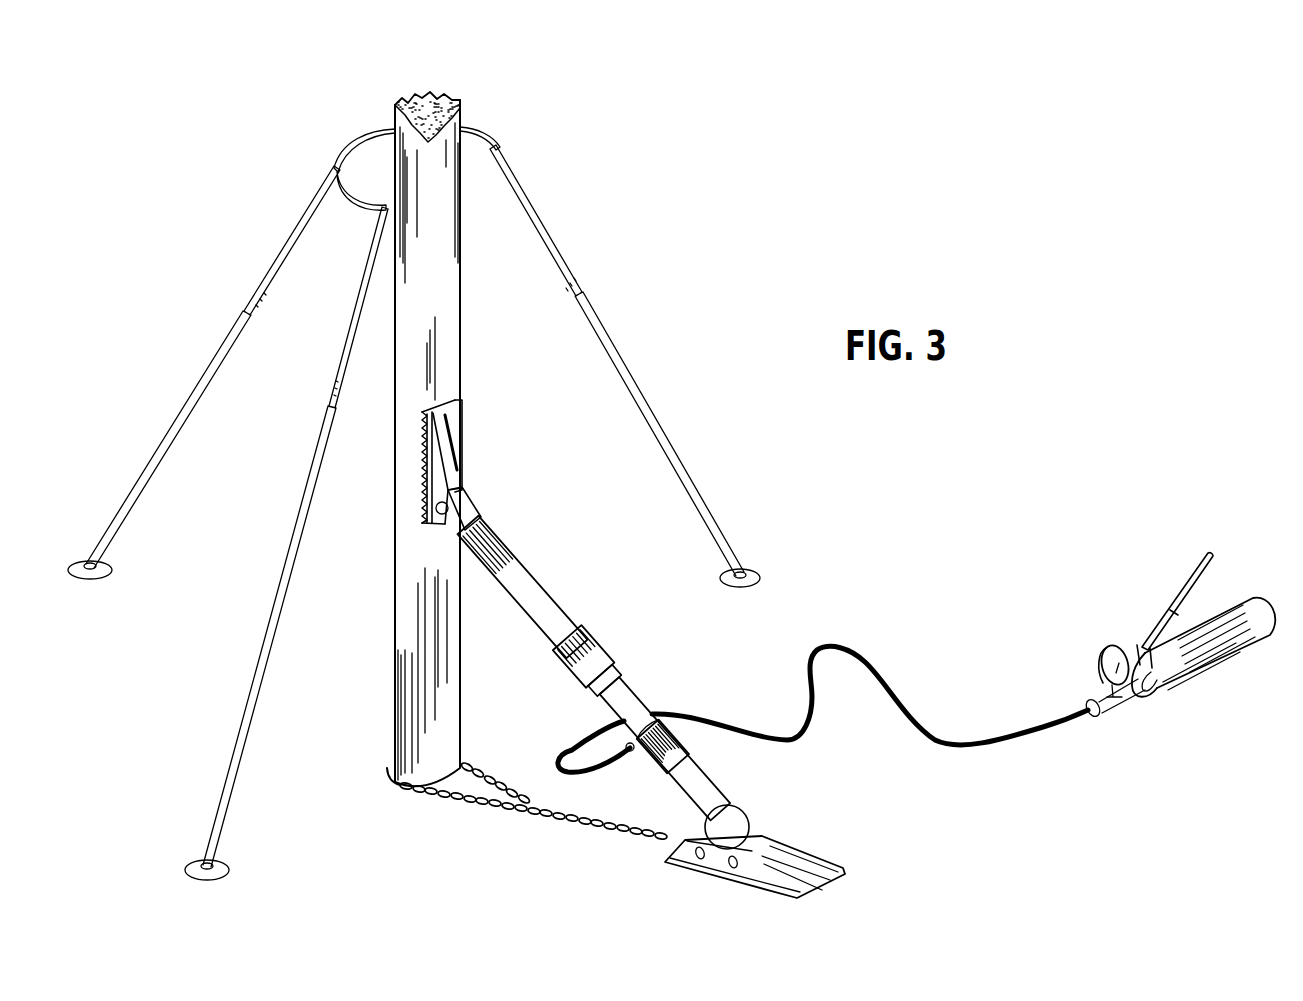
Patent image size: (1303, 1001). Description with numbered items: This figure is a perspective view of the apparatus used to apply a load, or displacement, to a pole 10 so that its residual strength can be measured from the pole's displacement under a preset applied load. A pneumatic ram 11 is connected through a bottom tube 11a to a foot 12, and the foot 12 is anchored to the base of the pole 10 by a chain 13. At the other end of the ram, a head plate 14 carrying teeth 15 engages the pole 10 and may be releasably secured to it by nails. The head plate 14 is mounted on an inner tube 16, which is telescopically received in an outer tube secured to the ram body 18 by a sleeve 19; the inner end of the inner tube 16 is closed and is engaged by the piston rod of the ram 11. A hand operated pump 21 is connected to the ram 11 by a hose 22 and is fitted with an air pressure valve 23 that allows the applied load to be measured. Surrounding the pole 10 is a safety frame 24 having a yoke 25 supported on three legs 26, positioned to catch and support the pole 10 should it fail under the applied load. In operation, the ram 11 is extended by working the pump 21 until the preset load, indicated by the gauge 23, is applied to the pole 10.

The pole 10 is at (462, 116).
The pneumatic ram 11 is at (615, 682).
The bottom tube 11a is at (702, 790).
The foot 12 is at (838, 866).
The chain 13 is at (530, 810).
The head plate 14 is at (463, 462).
The teeth 15 is at (420, 458).
The inner tube 16 is at (478, 520).
The ram body 18 is at (543, 592).
The sleeve 19 is at (614, 657).
The hand operated pump 21 is at (1220, 665).
The hose 22 is at (1028, 742).
The air pressure valve 23 is at (1108, 650).
The safety frame 24 is at (644, 393).
The yoke 25 is at (500, 147).
The legs 26 is at (335, 355).